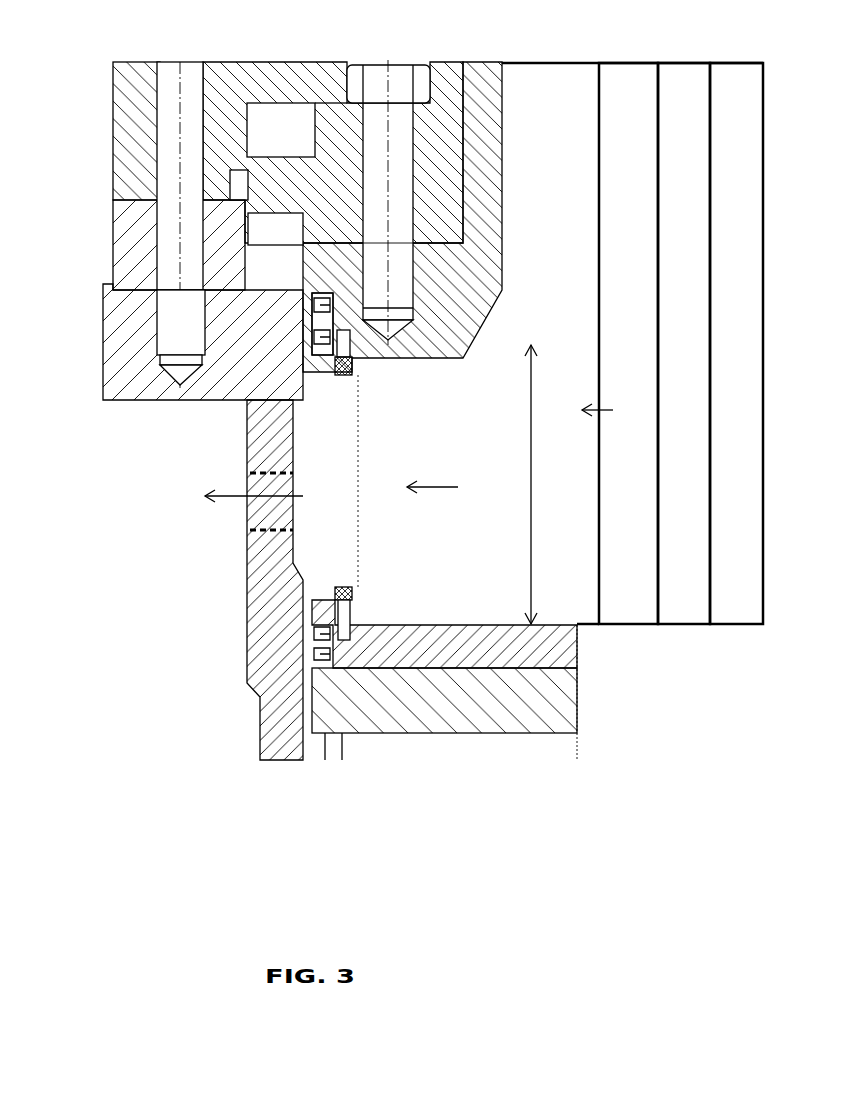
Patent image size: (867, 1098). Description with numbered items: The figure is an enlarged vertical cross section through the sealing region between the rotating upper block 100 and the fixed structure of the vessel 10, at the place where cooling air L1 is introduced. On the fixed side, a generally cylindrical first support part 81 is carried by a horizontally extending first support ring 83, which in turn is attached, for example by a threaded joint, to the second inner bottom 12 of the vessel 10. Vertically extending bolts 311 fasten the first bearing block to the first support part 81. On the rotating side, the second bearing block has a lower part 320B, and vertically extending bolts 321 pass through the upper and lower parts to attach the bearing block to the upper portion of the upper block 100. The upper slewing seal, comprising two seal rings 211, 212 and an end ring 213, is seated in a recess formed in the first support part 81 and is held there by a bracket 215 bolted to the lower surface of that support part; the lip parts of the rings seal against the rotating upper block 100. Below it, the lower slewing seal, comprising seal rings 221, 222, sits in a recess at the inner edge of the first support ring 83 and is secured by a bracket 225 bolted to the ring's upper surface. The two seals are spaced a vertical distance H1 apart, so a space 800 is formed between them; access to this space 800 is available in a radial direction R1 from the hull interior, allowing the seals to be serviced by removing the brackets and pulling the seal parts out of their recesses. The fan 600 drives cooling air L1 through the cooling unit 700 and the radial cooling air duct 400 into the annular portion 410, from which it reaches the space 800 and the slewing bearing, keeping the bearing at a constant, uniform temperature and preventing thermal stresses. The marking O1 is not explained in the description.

The vessel 10 is at (639, 28).
The second inner bottom 12 is at (468, 722).
The first support part 81 is at (404, 360).
The first support ring 83 is at (455, 633).
The upper block 100 is at (254, 451).
The seal ring 211 is at (312, 343).
The seal ring 212 is at (312, 314).
The end ring 213 is at (332, 303).
The bracket 215 is at (331, 377).
The seal ring 221 is at (315, 627).
The seal ring 222 is at (313, 650).
The bracket 225 is at (320, 603).
The bolts 311 is at (403, 181).
The lower part 320B is at (118, 387).
The bolts 321 is at (160, 132).
The radial cooling air duct 400 is at (655, 322).
The annular portion 410 is at (576, 322).
The fan 600 is at (757, 571).
The cooling unit 700 is at (707, 571).
The space 800 is at (354, 490).
The vertical distance H1 is at (546, 484).
The cooling air L1 is at (392, 454).
The radial direction R1 is at (449, 490).
The opening O1 is at (253, 517).